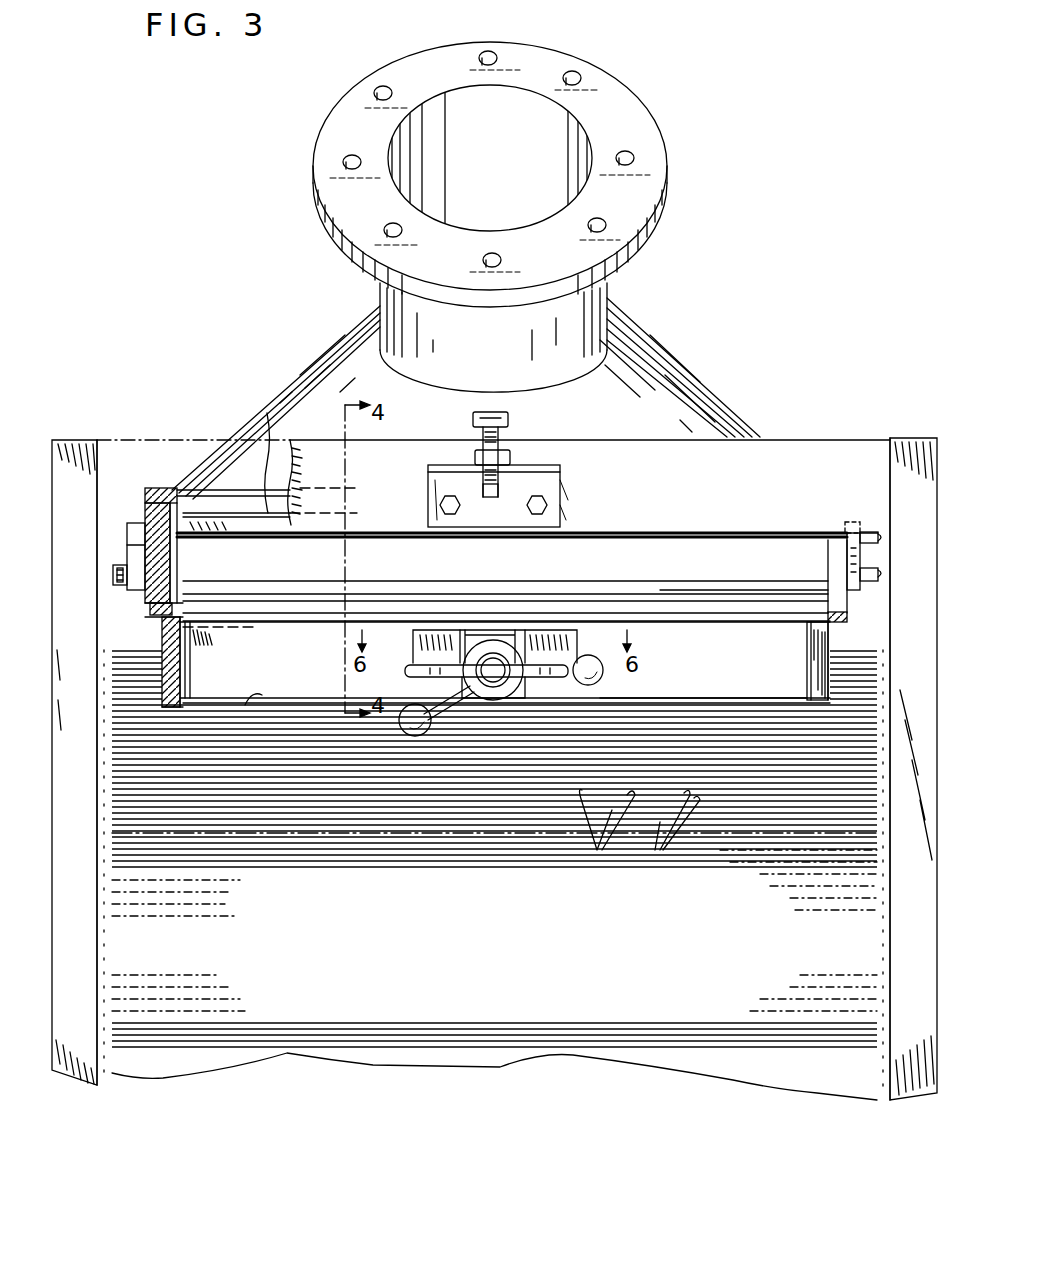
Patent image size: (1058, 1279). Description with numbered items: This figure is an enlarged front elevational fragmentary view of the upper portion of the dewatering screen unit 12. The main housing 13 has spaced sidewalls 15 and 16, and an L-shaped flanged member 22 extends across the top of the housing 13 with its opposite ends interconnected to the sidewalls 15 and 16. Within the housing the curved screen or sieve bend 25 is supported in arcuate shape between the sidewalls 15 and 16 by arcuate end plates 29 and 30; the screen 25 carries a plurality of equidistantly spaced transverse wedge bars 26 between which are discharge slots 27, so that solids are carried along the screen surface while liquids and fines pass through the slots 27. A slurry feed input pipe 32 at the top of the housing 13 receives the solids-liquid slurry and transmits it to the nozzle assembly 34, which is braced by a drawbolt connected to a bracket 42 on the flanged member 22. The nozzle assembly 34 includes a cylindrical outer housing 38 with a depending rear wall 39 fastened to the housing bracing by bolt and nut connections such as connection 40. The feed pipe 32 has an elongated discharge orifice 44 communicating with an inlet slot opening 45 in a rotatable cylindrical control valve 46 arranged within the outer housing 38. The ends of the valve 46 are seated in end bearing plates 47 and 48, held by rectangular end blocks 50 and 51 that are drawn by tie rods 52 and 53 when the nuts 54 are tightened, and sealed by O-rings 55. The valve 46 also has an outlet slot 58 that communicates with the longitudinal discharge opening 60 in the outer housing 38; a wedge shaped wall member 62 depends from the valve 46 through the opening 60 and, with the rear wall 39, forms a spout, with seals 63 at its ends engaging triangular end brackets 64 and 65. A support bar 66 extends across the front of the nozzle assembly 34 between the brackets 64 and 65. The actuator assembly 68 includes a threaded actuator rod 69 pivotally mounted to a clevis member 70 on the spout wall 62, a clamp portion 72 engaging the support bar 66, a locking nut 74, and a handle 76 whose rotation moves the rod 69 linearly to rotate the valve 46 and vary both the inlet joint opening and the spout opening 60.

The dewatering screen unit 12 is at (770, 160).
The main housing 13 is at (935, 768).
The sidewall 15 is at (75, 445).
The sidewall 16 is at (916, 447).
The L-shaped flanged member 22 is at (782, 452).
The curved screen or sieve bend 25 is at (475, 1045).
The transverse wedge bars 26 is at (671, 830).
The discharge slots 27 is at (608, 834).
The arcuate end plate 29 is at (107, 942).
The arcuate end plate 30 is at (884, 933).
The slurry feed input pipe 32 is at (568, 315).
The nozzle assembly 34 is at (333, 727).
The cylindrical outer housing 38 is at (733, 590).
The depending rear wall 39 is at (728, 700).
The bolt and nut connection 40 is at (506, 437).
The bracket 42 is at (560, 480).
The elongated discharge orifice 44 is at (197, 492).
The inlet slot opening 45 is at (223, 503).
The rotatable cylindrical control valve 46 is at (243, 532).
The end bearing plate 47 is at (143, 503).
The end bearing plate 48 is at (838, 597).
The rectangular end block 50 is at (133, 522).
The rectangular end block 51 is at (860, 558).
The tie rod 52 is at (878, 530).
The tie rod 53 is at (117, 573).
The nuts 54 is at (112, 580).
The sealing O-rings 55 is at (150, 611).
The outlet slot 58 is at (207, 600).
The longitudinal discharge opening 60 is at (252, 700).
The wedge shaped wall member 62 is at (694, 672).
The seals 63 is at (180, 675).
The end bracket 64 is at (160, 626).
The end bracket 65 is at (815, 672).
The support bar 66 is at (213, 716).
The actuator assembly 68 is at (540, 626).
The threaded actuator rod 69 is at (493, 678).
The clevis member 70 is at (455, 632).
The clamp portion 72 is at (473, 700).
The locking nut 74 is at (495, 648).
The handle 76 is at (585, 684).